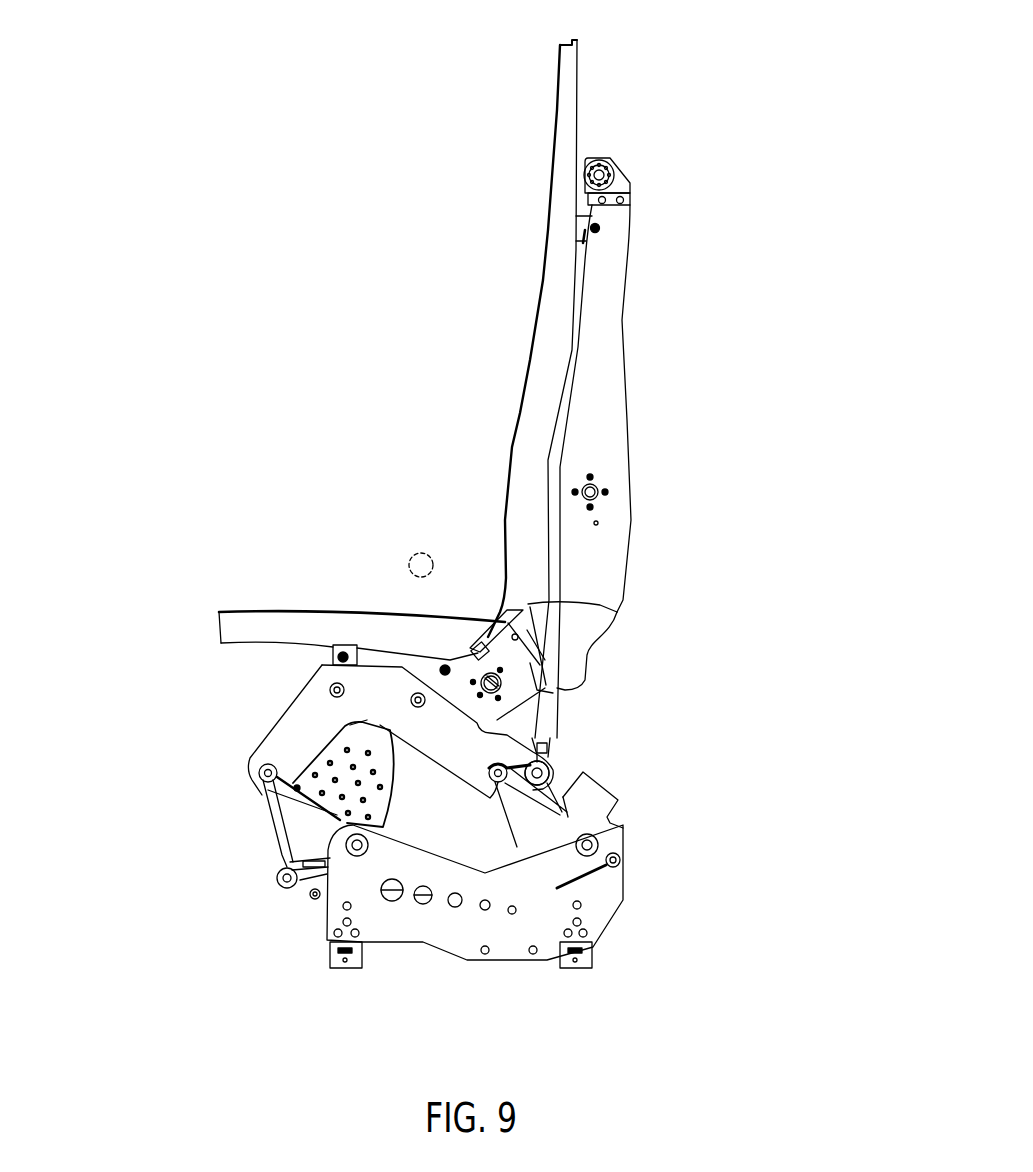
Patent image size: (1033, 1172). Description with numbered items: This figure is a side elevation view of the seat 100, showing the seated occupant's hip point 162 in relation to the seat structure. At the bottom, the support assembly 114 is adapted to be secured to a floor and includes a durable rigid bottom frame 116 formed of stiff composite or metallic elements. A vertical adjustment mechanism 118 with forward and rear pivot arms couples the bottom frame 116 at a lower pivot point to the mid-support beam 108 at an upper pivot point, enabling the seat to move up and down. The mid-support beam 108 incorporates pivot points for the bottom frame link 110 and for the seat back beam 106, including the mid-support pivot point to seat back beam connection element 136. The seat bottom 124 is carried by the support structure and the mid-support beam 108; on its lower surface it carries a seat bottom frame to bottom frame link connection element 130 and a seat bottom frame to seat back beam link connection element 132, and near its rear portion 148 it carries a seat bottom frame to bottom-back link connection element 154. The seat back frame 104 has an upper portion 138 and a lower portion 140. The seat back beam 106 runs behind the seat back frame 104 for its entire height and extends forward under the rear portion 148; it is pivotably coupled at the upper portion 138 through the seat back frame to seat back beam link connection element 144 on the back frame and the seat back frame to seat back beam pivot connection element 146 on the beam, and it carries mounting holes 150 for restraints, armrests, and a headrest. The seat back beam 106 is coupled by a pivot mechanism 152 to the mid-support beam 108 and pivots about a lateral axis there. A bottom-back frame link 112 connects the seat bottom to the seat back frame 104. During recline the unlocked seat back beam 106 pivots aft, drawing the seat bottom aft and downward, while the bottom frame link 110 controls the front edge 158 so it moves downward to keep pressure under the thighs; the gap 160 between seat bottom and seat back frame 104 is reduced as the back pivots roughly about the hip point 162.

The seat 100 is at (748, 151).
The seat back frame 104 is at (560, 250).
The seat back beam 106 is at (608, 563).
The mid-support beam 108 is at (305, 720).
The bottom frame link 110 is at (333, 662).
The bottom-back frame link 112 is at (533, 690).
The support assembly 114 is at (545, 914).
The bottom frame 116 is at (417, 923).
The vertical adjustment mechanism 118 is at (282, 843).
The seat bottom 124 is at (273, 618).
The seat bottom frame to bottom frame link connection element 130 is at (333, 657).
The seat bottom frame to seat back beam link connection element 132 is at (405, 650).
The mid-support pivot point to seat back beam connection element 136 is at (427, 705).
The pivot mechanism 152 is at (537, 773).
The upper portion 138 is at (563, 153).
The lower portion 140 is at (600, 617).
The seat back frame to seat back beam link connection element 144 is at (587, 248).
The seat back frame to seat back beam pivot connection element 146 is at (600, 227).
The rear portion 148 is at (482, 627).
The mounting holes 150 is at (598, 483).
The seat bottom frame to bottom-back link connection element 154 is at (548, 640).
The front edge 158 is at (227, 626).
The gap 160 is at (528, 604).
The hip point 162 is at (421, 553).